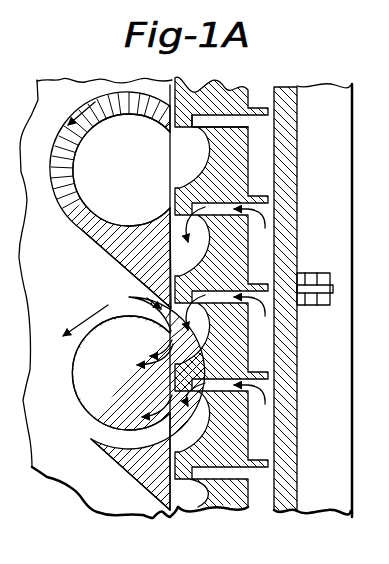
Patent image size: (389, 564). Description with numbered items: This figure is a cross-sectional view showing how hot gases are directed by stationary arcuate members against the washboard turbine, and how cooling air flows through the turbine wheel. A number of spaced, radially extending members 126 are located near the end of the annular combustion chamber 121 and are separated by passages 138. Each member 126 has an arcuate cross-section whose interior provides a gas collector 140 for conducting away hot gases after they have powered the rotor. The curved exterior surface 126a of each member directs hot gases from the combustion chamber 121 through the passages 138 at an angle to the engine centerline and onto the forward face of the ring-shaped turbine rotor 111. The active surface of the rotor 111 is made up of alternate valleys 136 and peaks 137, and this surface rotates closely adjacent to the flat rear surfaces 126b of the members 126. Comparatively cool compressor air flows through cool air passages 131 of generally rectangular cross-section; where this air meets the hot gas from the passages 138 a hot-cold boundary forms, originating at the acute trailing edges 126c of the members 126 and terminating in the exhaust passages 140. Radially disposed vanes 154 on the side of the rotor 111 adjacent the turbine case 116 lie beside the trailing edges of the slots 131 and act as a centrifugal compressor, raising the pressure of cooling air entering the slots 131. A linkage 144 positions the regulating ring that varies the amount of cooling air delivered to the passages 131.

The turbine rotor 111 is at (219, 504).
The turbine case 116 is at (333, 511).
The annular combustion chamber 121 is at (85, 468).
The radially extending member 126 is at (97, 231).
The curved exterior surface 126a is at (133, 284).
The flat rear surface 126b is at (176, 515).
The acute trailing edge 126c is at (167, 509).
The cool air passage 131 is at (241, 120).
The valley 136 is at (212, 153).
The peak 137 is at (171, 191).
The passage 138 is at (143, 297).
The gas collector 140 is at (137, 148).
The linkage 144 is at (320, 286).
The radially disposed vane 154 is at (276, 512).